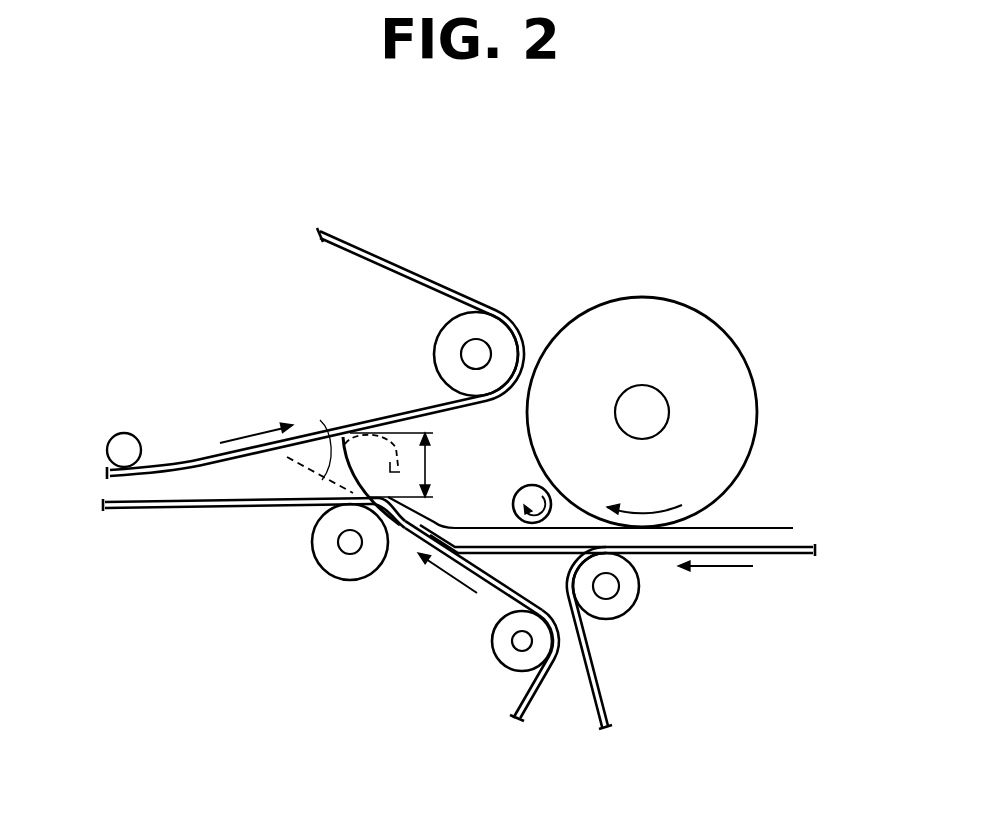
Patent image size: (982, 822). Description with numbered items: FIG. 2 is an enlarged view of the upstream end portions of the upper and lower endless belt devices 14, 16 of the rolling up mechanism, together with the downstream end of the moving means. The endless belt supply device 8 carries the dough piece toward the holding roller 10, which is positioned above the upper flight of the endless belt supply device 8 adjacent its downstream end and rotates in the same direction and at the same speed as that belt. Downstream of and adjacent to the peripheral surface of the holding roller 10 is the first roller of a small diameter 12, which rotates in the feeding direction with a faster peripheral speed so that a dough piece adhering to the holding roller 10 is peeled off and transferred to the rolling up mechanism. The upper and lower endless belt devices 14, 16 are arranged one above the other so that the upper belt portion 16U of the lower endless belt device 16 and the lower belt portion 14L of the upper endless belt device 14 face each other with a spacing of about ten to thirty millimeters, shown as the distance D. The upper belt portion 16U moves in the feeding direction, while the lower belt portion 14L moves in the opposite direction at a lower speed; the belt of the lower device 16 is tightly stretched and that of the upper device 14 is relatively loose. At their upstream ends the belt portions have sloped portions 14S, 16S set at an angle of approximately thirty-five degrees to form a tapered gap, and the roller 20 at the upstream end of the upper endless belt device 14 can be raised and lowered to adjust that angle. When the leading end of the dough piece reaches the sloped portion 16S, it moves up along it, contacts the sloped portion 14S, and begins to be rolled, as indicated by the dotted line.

The upper endless belt device 14 is at (412, 266).
The roller 20 is at (508, 348).
The holding roller 10 is at (690, 350).
The lower belt portion 14L is at (170, 462).
The sloped portion 14S is at (415, 408).
The distance D is at (400, 465).
The first roller of a small diameter 12 is at (517, 489).
The upper belt portion 16U is at (187, 510).
The sloped portion 16S is at (477, 560).
The lower endless belt device 16 is at (547, 695).
The endless belt supply device 8 is at (777, 555).